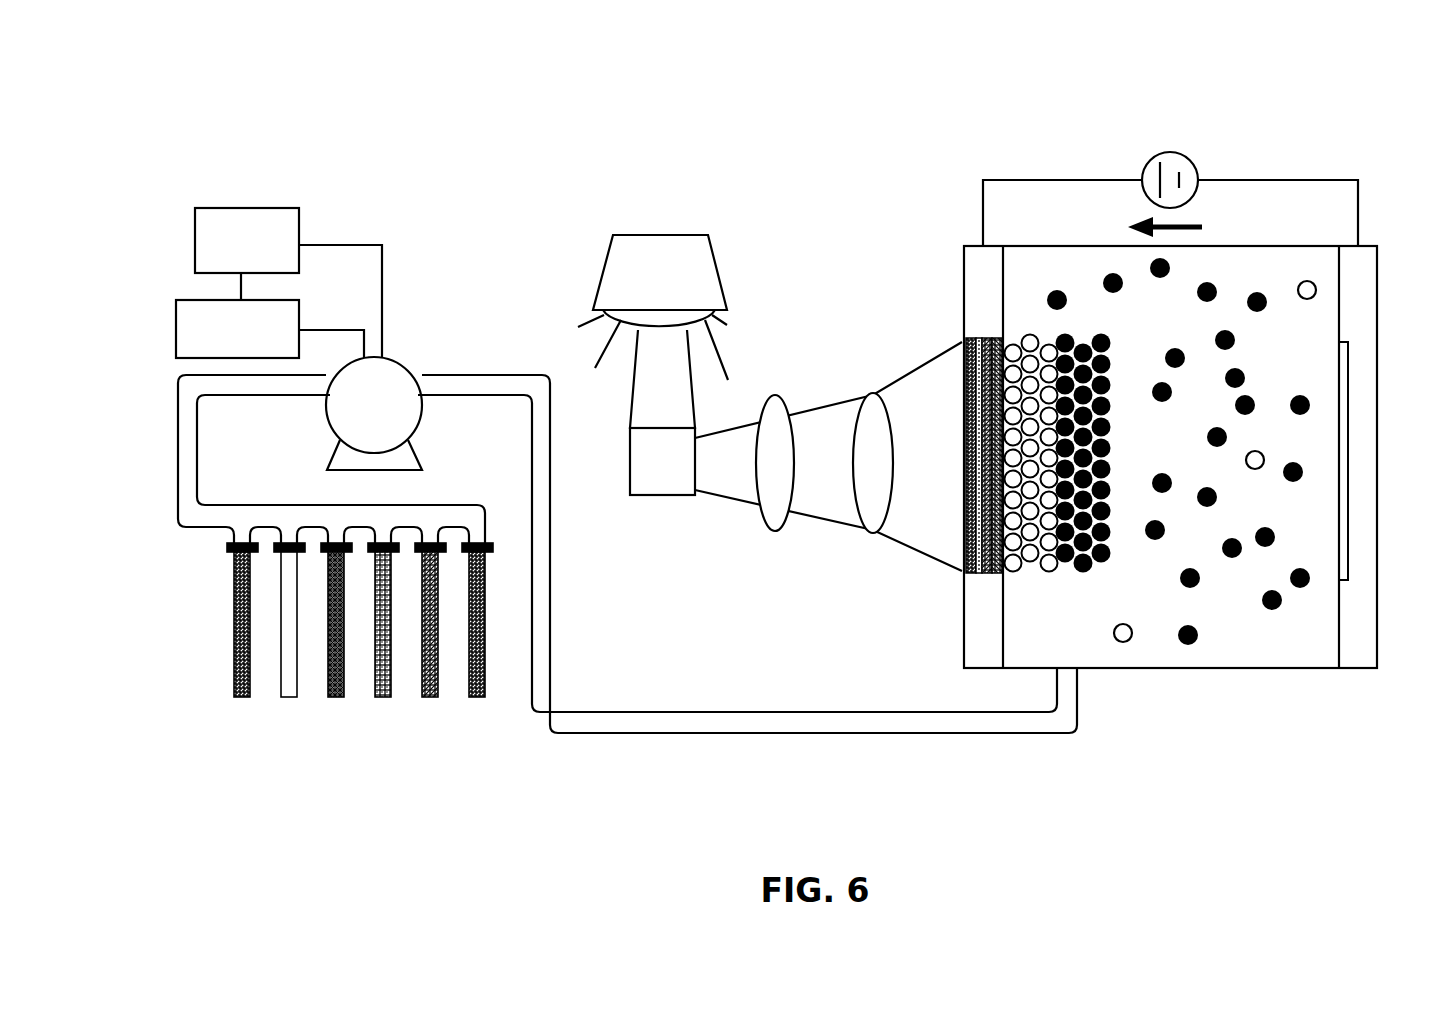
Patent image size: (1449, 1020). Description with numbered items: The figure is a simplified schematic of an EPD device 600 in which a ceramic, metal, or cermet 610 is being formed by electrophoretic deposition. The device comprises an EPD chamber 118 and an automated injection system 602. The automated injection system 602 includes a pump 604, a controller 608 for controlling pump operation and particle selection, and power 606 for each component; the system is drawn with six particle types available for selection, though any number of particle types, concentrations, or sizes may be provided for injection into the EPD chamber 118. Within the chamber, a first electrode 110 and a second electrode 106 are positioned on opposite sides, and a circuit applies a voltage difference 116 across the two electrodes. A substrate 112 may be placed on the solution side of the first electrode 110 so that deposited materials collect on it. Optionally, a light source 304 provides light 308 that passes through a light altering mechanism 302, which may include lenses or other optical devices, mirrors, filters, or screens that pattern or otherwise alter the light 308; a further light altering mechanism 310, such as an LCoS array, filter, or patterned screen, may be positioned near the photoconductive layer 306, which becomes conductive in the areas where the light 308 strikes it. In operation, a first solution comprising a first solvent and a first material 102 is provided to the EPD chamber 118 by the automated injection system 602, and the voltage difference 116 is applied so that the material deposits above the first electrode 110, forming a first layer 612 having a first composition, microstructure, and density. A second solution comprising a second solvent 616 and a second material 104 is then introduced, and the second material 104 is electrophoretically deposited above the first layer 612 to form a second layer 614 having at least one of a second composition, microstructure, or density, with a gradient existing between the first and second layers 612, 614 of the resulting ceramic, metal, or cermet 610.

The EPD device 600 is at (606, 125).
The automated injection system 602 is at (152, 196).
The pump 604 is at (403, 362).
The power 606 is at (286, 206).
The controller 608 is at (300, 301).
The light altering mechanism 302 is at (786, 344).
The light source 304 is at (653, 365).
The light 308 is at (852, 463).
The first electrode 110 is at (975, 338).
The light altering mechanism 310 is at (977, 362).
The substrate 112 is at (987, 523).
The photoconductive layer 306 is at (987, 560).
The voltage difference 116 is at (1142, 168).
The first material 102 is at (1313, 283).
The second material 104 is at (1188, 645).
The second electrode 106 is at (1345, 370).
The EPD chamber 118 is at (1308, 693).
The ceramic, metal, or cermet 610 is at (1097, 496).
The first layer 612 is at (1027, 586).
The second layer 614 is at (1117, 333).
The second solvent 616 is at (1239, 463).